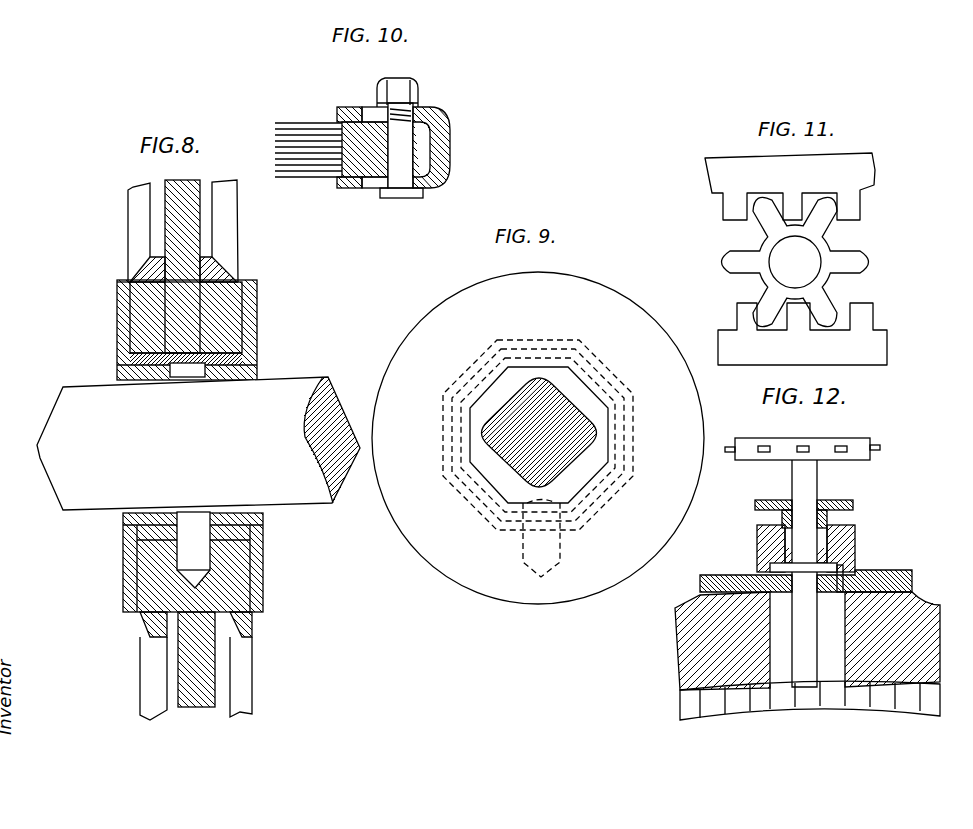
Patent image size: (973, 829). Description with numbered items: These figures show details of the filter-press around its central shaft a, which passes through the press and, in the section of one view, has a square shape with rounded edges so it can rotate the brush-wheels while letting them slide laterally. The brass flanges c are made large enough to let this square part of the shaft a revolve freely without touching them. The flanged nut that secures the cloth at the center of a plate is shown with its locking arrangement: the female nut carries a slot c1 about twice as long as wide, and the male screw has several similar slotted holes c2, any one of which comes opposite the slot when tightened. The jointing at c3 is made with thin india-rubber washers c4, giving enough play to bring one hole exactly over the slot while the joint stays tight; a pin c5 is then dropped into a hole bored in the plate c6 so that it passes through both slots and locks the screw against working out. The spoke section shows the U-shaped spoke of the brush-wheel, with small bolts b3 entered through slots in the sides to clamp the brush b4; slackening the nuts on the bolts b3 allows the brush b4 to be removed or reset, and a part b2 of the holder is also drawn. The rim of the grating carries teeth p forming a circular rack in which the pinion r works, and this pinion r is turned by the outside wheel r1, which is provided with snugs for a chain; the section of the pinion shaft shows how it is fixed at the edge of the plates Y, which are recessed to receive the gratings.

In FIG. 8, the shaft a is at (198, 443).
In FIG. 9, the shaft a is at (539, 432).
In FIG. 8, the brass flanges c is at (152, 375).
In FIG. 9, the brass flanges c is at (487, 395).
In FIG. 8, the slot c1 is at (135, 548).
In FIG. 8, the slotted holes c2 is at (196, 378).
In FIG. 8, the jointing c3 is at (186, 266).
In FIG. 8, the india-rubber washers c4 is at (130, 283).
In FIG. 8, the pin c5 is at (188, 528).
In FIG. 9, the pin c5 is at (562, 542).
In FIG. 8, the plate c6 is at (193, 576).
In FIG. 10, the brush holder plate b2 is at (353, 182).
In FIG. 10, the small bolts b3 is at (398, 116).
In FIG. 10, the brush b4 is at (315, 127).
In FIG. 11, the teeth p is at (796, 259).
In FIG. 12, the teeth p is at (760, 706).
In FIG. 11, the pinion r is at (795, 261).
In FIG. 12, the pinion r is at (783, 697).
In FIG. 12, the outside wheel r1 is at (862, 441).
In FIG. 12, the plates Y is at (807, 630).